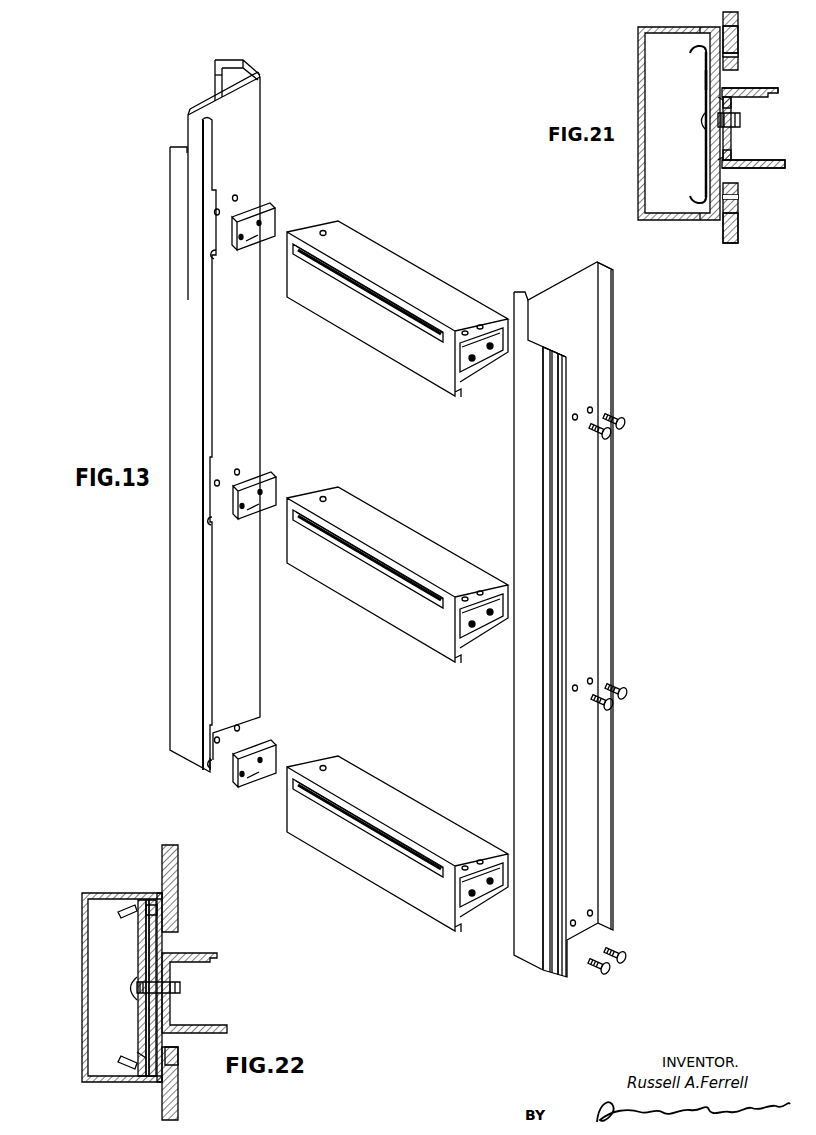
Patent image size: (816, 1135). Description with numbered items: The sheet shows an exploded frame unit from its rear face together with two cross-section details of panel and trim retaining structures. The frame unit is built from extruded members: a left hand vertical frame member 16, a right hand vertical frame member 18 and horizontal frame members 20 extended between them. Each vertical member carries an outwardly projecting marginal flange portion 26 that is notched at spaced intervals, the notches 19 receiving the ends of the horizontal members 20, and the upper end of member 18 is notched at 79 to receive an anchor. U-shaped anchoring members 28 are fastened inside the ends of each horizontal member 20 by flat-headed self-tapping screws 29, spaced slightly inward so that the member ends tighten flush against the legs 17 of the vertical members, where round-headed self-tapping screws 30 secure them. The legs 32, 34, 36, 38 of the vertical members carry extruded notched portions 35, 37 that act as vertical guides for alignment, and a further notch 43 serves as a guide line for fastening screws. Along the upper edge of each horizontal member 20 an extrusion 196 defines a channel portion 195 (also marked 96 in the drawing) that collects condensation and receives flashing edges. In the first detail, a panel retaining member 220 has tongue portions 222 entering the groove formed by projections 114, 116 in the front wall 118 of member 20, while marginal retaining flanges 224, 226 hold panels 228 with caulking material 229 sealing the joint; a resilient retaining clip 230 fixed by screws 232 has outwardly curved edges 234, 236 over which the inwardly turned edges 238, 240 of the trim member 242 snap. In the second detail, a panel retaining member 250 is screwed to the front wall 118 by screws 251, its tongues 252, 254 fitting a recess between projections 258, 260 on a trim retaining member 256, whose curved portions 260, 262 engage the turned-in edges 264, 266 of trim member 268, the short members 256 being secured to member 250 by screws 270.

In FIG. 13, the left hand vertical frame member 16 is at (614, 602).
In FIG. 13, the leg of vertical frame member 17 is at (238, 91).
In FIG. 13, the right hand vertical frame member 18 is at (171, 252).
In FIG. 13, the notch 19 is at (214, 255).
In FIG. 13, the horizontal frame member 20 is at (428, 277).
In FIG. 21, the horizontal frame member 20 is at (765, 169).
In FIG. 22, the horizontal frame member 20 is at (221, 1031).
In FIG. 13, the marginal flange portion 26 is at (213, 168).
In FIG. 13, the U-shaped anchoring member 28 is at (273, 209).
In FIG. 13, the flat-headed self-tapping screw 29 is at (481, 324).
In FIG. 13, the round-headed self-tapping screw 30 is at (616, 434).
In FIG. 13, the leg 32 is at (215, 72).
In FIG. 13, the leg 34 is at (614, 269).
In FIG. 13, the extruded notched portion 35 is at (226, 60).
In FIG. 13, the leg 36 is at (170, 186).
In FIG. 13, the extruded notched portion 37 is at (560, 389).
In FIG. 13, the leg 38 is at (552, 352).
In FIG. 13, the notch 43 is at (546, 429).
In FIG. 13, the notch 79 is at (180, 147).
In FIG. 13, the rib 96 is at (373, 563).
In FIG. 13, the channel portion 195 is at (372, 284).
In FIG. 13, the extrusion 196 is at (397, 306).
In FIG. 21, the projection 114 is at (717, 100).
In FIG. 21, the projection 116 is at (718, 158).
In FIG. 21, the front wall 118 is at (735, 143).
In FIG. 22, the front wall 118 is at (176, 996).
In FIG. 21, the panel retaining member 220 is at (732, 90).
In FIG. 21, the tongue portion 222 is at (732, 104).
In FIG. 21, the marginal retaining flange 224 is at (738, 26).
In FIG. 21, the marginal retaining flange 226 is at (738, 215).
In FIG. 21, the panel 228 is at (738, 38).
In FIG. 21, the caulking material 229 is at (738, 55).
In FIG. 21, the resilient retaining clip 230 is at (704, 76).
In FIG. 21, the self-tapping round-headed screw 232 is at (700, 128).
In FIG. 21, the outwardly curved upper marginal edge 234 is at (697, 52).
In FIG. 21, the outwardly curved lower marginal edge 236 is at (697, 197).
In FIG. 21, the inwardly turned edge 238 is at (702, 32).
In FIG. 21, the inwardly turned edge 240 is at (704, 214).
In FIG. 21, the trim member 242 is at (638, 58).
In FIG. 22, the panel retaining member 250 is at (163, 946).
In FIG. 22, the self-tapping round-headed screw 251 is at (147, 1002).
In FIG. 22, the tongue 252 is at (140, 922).
In FIG. 22, the tongue 254 is at (140, 1056).
In FIG. 22, the trim retaining member 256 is at (150, 959).
In FIG. 22, the projection 258 is at (163, 913).
In FIG. 22, the projection / extruded curved portion 260 is at (135, 908).
In FIG. 22, the extruded curved portion 262 is at (137, 1062).
In FIG. 22, the turned-in edge 264 is at (152, 898).
In FIG. 22, the turned-in edge 266 is at (146, 1077).
In FIG. 22, the trim member 268 is at (82, 921).
In FIG. 22, the self-tapping screw 270 is at (130, 987).